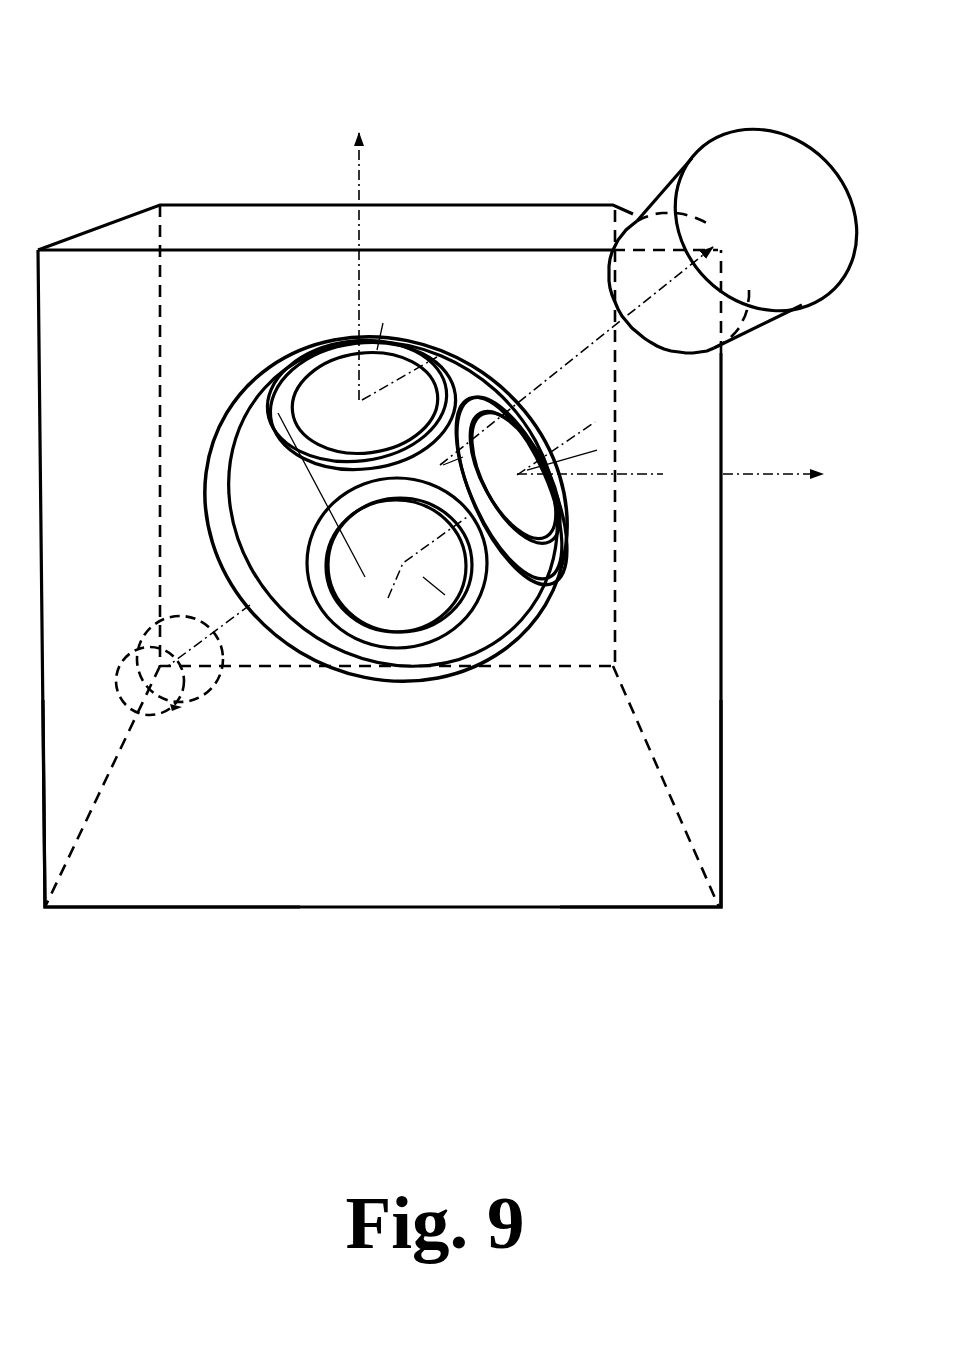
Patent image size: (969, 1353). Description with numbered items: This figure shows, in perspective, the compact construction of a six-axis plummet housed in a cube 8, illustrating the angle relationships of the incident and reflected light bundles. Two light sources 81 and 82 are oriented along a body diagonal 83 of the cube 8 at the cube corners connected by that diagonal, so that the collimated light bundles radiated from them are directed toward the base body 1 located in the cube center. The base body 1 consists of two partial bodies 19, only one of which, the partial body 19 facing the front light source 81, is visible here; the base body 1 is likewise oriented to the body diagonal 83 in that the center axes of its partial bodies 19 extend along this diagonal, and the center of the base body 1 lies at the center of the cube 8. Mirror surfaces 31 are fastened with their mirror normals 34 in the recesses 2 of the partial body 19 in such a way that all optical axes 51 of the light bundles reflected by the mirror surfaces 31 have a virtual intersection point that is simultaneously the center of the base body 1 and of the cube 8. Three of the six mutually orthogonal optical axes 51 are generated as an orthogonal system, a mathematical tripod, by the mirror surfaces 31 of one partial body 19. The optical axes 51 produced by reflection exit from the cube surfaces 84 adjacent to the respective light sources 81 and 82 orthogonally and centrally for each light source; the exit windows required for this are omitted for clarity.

The base body 1 is at (268, 365).
The recess 2 is at (499, 597).
The cube 8 is at (572, 909).
The partial body 19 is at (497, 597).
The mirror surface 31 is at (503, 453).
The mirror normal 34 is at (578, 453).
The optical axis 51 is at (361, 180).
The light source 81 is at (770, 167).
The light source 82 is at (211, 688).
The body diagonal 83 is at (623, 327).
The cube surface 84 is at (224, 851).